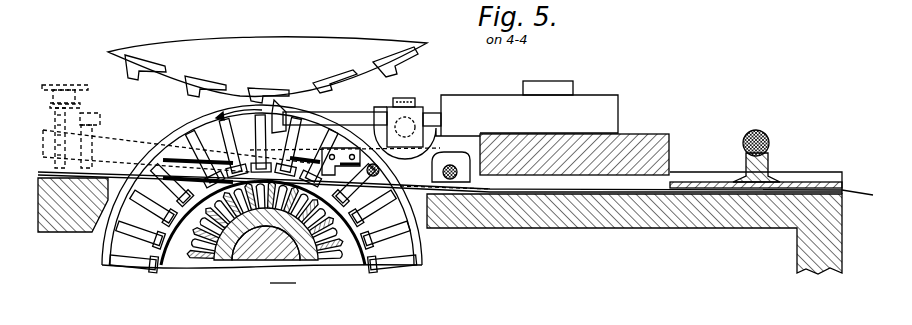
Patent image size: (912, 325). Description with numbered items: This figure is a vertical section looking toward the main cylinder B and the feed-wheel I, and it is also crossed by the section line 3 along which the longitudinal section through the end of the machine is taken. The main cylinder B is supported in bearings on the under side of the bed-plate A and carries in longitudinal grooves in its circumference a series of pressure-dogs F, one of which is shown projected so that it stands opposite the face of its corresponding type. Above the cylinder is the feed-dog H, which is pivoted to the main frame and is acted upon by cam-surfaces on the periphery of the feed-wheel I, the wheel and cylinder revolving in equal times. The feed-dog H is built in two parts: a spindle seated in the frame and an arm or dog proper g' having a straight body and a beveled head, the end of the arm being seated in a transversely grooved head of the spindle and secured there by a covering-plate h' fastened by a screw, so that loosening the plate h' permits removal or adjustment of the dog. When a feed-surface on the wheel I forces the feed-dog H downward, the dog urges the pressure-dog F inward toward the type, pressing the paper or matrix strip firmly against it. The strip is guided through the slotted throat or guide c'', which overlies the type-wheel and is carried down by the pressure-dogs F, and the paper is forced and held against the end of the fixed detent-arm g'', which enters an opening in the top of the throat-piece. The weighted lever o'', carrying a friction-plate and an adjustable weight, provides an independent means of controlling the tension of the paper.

The section line 3 3 is at (282, 32).
The feed-wheel I is at (267, 70).
The main cylinder B is at (262, 195).
The pressure-dog F is at (165, 194).
The throat or guide c'' is at (241, 145).
The arm or dog proper g' is at (329, 116).
The feed-dog H is at (379, 99).
The covering-plate h' is at (427, 121).
The fixed detent-arm g'' is at (350, 154).
The bed-plate A is at (634, 223).
The weighted lever o'' is at (764, 154).